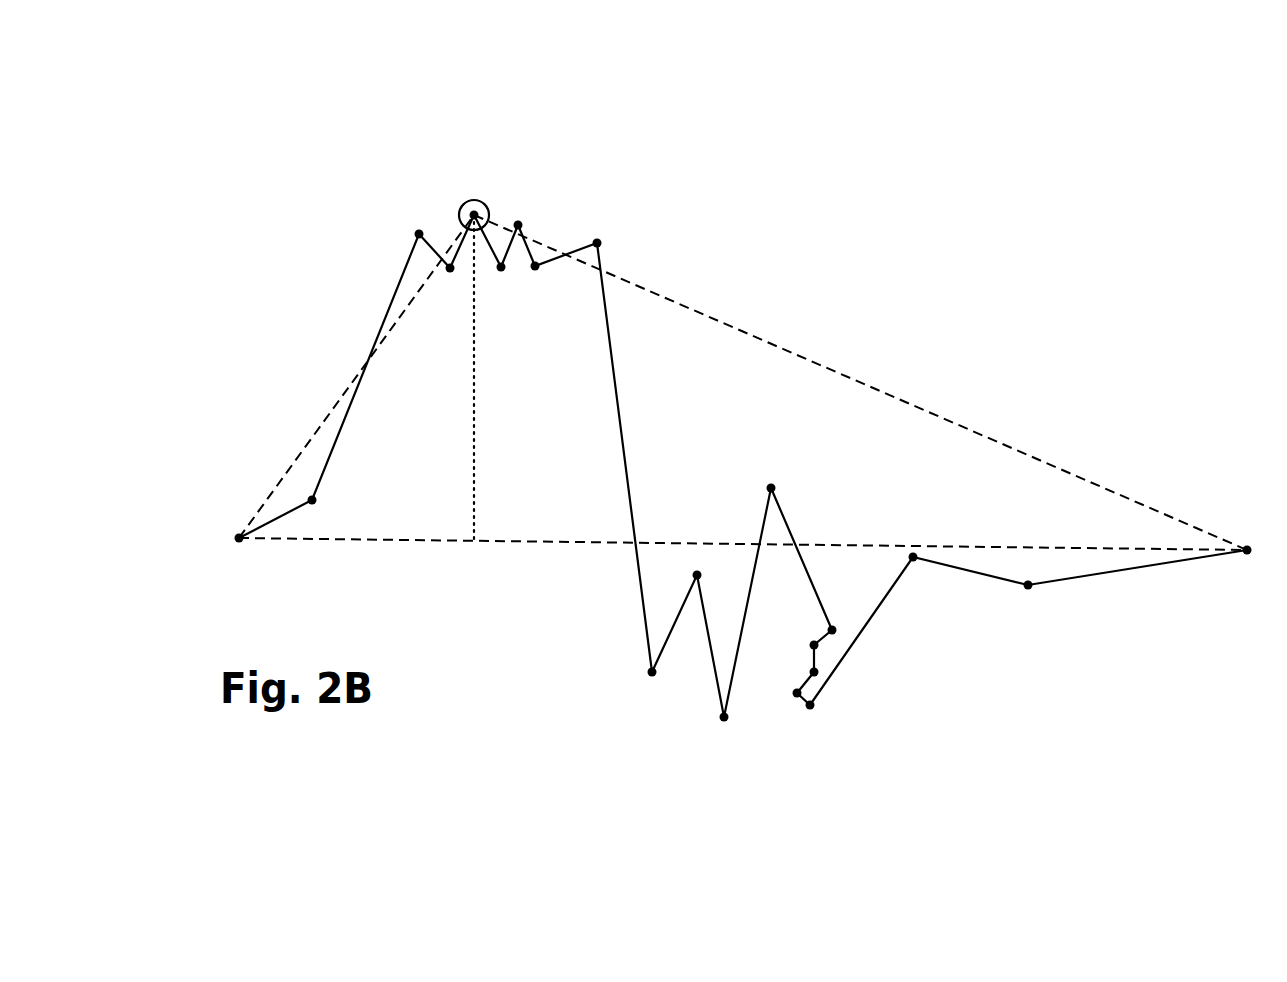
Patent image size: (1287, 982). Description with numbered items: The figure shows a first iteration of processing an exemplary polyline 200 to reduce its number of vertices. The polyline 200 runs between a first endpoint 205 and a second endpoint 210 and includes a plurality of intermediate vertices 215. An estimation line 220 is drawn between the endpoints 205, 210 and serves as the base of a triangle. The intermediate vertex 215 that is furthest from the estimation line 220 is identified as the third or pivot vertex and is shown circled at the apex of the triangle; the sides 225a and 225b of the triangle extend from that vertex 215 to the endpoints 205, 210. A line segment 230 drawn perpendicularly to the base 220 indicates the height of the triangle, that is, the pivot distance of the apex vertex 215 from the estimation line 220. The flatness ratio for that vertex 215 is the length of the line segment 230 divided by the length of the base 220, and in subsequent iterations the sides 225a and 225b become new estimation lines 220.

The polyline 200 is at (618, 130).
The first endpoint 205 is at (232, 538).
The second endpoint 210 is at (1247, 542).
The intermediate vertices 215 is at (676, 466).
The estimation line 220 is at (552, 548).
The first side of triangle 225a is at (310, 436).
The second side of triangle 225b is at (866, 373).
The height line segment 230 is at (480, 433).